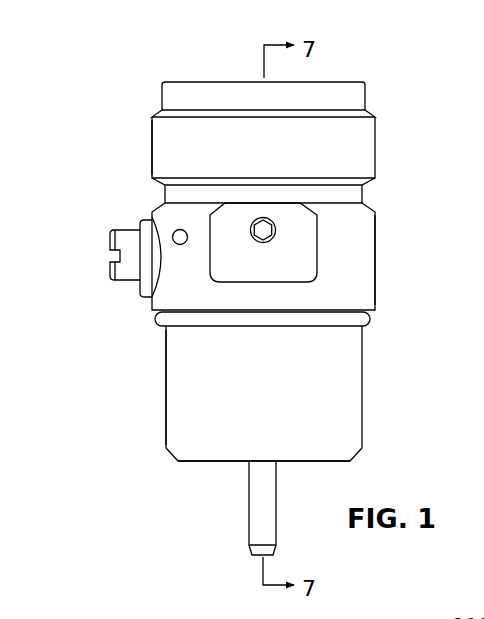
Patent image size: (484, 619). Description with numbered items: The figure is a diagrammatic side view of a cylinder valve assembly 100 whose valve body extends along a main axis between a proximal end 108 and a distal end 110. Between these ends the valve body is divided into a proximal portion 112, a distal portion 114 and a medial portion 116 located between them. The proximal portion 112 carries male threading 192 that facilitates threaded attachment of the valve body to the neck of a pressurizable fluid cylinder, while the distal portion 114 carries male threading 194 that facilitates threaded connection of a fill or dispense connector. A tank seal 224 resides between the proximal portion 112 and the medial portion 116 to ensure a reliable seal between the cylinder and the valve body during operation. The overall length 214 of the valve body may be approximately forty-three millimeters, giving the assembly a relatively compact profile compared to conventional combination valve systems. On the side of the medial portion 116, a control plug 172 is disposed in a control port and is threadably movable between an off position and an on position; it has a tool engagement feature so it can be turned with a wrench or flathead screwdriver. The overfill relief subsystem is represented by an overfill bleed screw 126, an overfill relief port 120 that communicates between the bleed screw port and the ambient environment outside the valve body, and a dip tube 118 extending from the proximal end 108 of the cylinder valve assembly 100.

The cylinder valve assembly 100 is at (91, 82).
The distal end 110 is at (200, 81).
The distal portion 114 is at (380, 145).
The male threading 194 is at (148, 147).
The medial portion 116 is at (381, 268).
The length of the valve body 214 is at (483, 252).
The overfill bleed screw 126 is at (263, 230).
The overfill relief port 120 is at (180, 237).
The control plug 172 is at (129, 284).
The tank seal 224 is at (368, 328).
The proximal portion 112 is at (375, 378).
The male threading 192 is at (161, 388).
The proximal end 108 is at (213, 462).
The dip tube 118 is at (249, 509).